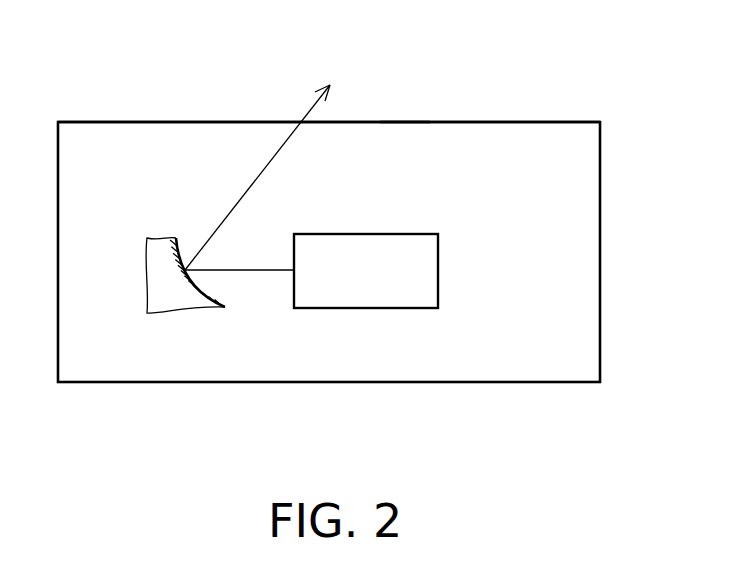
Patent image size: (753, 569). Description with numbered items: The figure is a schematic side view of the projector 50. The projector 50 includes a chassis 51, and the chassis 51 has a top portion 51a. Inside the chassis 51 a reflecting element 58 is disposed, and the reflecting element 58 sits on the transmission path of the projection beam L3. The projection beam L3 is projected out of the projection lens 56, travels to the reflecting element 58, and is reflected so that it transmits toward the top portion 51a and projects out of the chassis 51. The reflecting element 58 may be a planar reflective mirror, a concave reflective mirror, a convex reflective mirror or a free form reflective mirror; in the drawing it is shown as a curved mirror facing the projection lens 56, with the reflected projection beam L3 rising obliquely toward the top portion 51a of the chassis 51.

The projector 50 is at (612, 155).
The chassis 51 is at (529, 122).
The top portion 51a is at (402, 115).
The projection lens 56 is at (438, 270).
The reflecting element 58 is at (175, 303).
The projection beam L3 is at (302, 115).